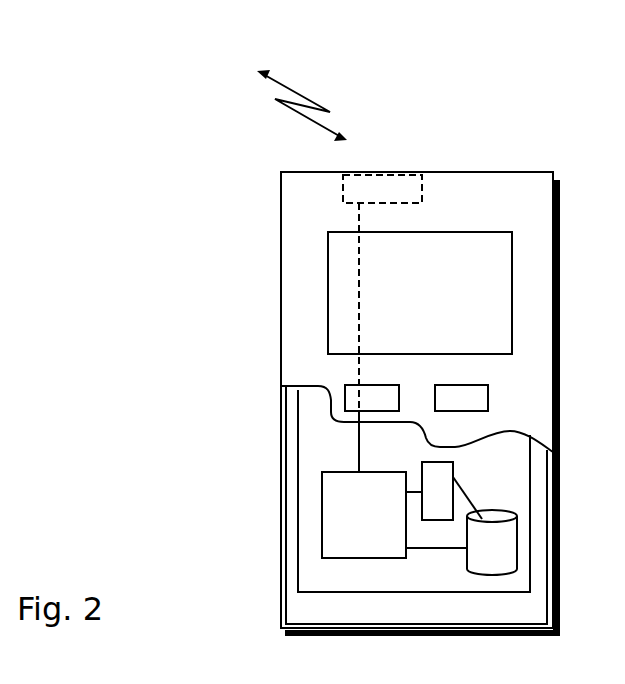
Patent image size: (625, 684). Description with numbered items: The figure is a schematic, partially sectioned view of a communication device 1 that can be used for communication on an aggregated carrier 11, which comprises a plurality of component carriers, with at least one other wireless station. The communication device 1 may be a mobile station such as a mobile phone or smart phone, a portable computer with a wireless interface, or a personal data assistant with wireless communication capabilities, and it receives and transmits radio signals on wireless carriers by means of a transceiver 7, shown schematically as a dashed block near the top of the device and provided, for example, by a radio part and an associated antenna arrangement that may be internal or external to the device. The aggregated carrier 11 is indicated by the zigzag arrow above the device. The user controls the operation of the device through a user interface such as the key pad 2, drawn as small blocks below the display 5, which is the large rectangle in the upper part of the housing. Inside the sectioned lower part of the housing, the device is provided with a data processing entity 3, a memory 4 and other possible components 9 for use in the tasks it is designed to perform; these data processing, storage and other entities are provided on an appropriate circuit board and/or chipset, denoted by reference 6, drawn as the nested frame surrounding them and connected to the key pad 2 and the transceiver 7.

The communication device 1 is at (281, 210).
The key pad 2 is at (348, 397).
The data processing entity 3 is at (328, 500).
The memory 4 is at (488, 552).
The display 5 is at (345, 282).
The circuit board 6 is at (322, 575).
The transceiver 7 is at (368, 188).
The other components 9 is at (437, 476).
The aggregated carrier 11 is at (278, 78).